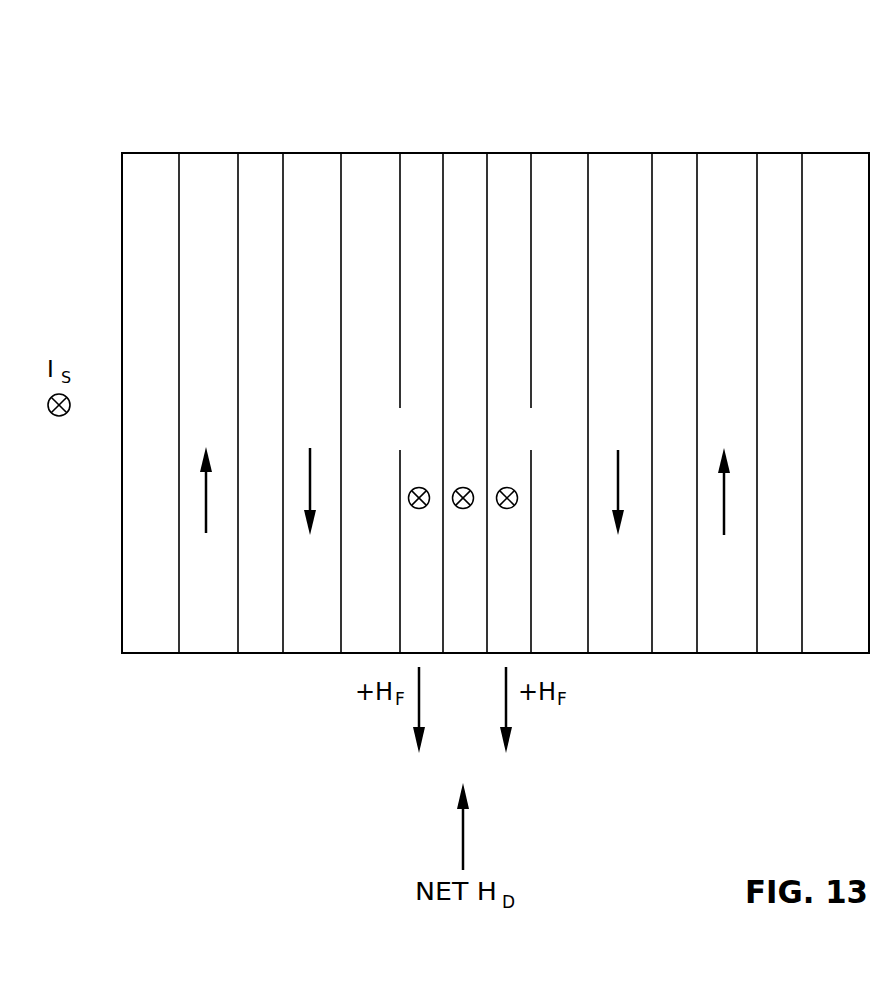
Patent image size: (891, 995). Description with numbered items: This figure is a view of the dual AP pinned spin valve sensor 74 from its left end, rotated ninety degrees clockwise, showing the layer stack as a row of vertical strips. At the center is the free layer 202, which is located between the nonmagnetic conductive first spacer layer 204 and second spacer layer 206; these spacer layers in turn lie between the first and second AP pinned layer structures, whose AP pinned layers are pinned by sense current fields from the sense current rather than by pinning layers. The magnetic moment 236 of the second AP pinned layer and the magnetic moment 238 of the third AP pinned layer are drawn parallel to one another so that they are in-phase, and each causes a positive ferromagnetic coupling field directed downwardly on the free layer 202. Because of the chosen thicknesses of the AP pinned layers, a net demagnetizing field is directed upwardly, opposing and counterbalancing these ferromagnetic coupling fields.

The dual AP pinned spin valve sensor 74 is at (688, 114).
The free layer 202 is at (400, 143).
The first spacer layer 204 is at (374, 165).
The second spacer layer 206 is at (548, 163).
The magnetic moment of the second AP pinned layer 236 is at (310, 459).
The magnetic moment of the third AP pinned layer 238 is at (618, 462).